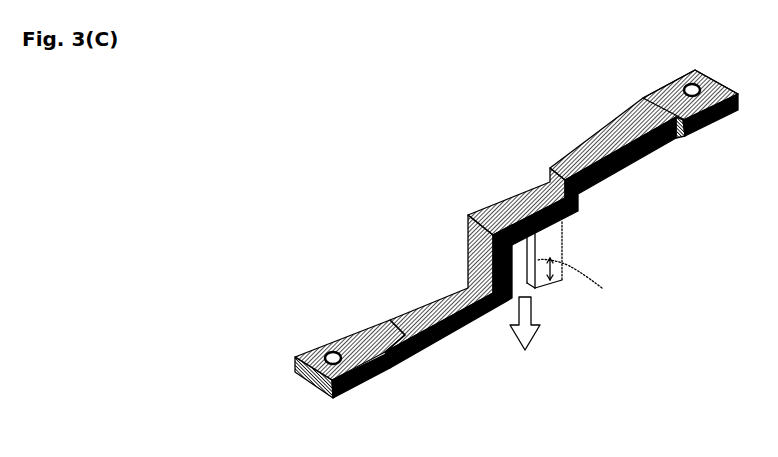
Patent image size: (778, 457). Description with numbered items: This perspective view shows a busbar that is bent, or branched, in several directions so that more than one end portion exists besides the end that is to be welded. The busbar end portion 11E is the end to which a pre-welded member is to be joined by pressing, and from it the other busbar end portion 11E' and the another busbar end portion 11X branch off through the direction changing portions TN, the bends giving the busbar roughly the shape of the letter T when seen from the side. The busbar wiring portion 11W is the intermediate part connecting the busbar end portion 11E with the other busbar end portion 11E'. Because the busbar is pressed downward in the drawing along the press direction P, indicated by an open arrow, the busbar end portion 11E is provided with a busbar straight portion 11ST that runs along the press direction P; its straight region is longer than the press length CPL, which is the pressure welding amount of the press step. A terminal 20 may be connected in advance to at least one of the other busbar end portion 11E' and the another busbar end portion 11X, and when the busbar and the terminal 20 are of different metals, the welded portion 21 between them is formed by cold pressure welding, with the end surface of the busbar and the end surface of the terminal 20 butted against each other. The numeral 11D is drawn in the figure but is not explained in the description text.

The terminal 20 is at (347, 337).
The welded portion 21 is at (379, 313).
The busbar wiring portion 11W is at (419, 163).
The another busbar end portion 11X is at (659, 72).
The deformation portion 11D is at (557, 120).
The direction changing portion TN is at (565, 160).
The busbar straight portion 11ST is at (560, 250).
The press length CPL is at (588, 281).
The busbar end portion 11E is at (578, 316).
The press direction P is at (519, 323).
The other busbar end portion 11E' is at (435, 416).